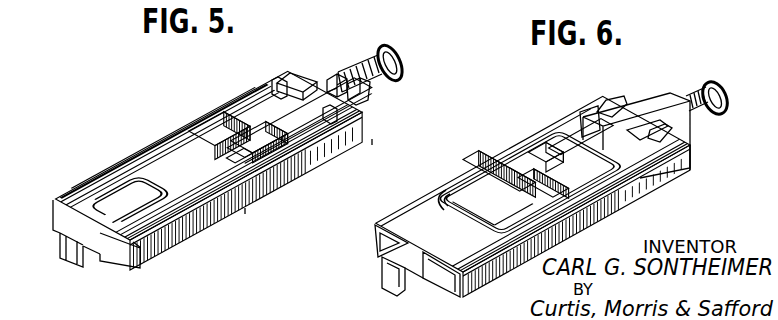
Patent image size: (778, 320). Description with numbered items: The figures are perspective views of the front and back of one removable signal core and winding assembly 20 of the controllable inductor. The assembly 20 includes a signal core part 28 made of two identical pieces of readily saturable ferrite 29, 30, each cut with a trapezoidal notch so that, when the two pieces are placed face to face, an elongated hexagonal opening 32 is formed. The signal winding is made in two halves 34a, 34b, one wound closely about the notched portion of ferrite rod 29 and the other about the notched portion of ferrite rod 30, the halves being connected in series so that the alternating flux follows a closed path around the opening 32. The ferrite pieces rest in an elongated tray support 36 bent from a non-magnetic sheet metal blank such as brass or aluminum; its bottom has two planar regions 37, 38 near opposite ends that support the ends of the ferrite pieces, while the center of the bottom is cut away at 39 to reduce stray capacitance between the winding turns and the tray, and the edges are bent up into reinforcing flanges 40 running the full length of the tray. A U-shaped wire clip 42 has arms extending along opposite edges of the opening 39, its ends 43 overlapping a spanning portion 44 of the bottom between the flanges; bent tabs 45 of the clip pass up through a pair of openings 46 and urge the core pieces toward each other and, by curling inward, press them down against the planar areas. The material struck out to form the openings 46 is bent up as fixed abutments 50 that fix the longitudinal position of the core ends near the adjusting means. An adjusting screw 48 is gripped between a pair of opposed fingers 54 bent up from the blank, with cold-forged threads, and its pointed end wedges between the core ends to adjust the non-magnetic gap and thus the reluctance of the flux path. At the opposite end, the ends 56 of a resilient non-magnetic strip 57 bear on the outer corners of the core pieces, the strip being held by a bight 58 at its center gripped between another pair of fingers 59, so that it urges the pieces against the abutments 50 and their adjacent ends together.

In FIG. 5, the signal core and winding assembly 20 is at (170, 124).
In FIG. 6, the signal core and winding assembly 20 is at (610, 221).
In FIG. 5, the signal core part 28 is at (152, 171).
In FIG. 6, the signal core part 28 is at (497, 186).
In FIG. 5, the ferrite piece 29 is at (298, 78).
In FIG. 5, the ferrite piece 30 is at (317, 143).
In FIG. 6, the ferrite piece 30 is at (553, 152).
In FIG. 5, the hexagonal slot or opening 32 is at (256, 134).
In FIG. 6, the hexagonal slot or opening 32 is at (560, 163).
In FIG. 5, the signal winding half 34a is at (210, 132).
In FIG. 5, the signal winding half 34b is at (263, 172).
In FIG. 5, the tray support 36 is at (170, 258).
In FIG. 6, the tray support 36 is at (375, 242).
In FIG. 6, the planar region 37 is at (467, 193).
In FIG. 6, the planar region 38 is at (583, 133).
In FIG. 6, the cut-away opening 39 is at (612, 198).
In FIG. 5, the reinforcing flange 40 is at (170, 137).
In FIG. 6, the reinforcing flange 40 is at (570, 228).
In FIG. 6, the U-shaped wire clip 42 is at (442, 200).
In FIG. 6, the wire clip end 43 is at (600, 102).
In FIG. 6, the spanning portion 44 is at (627, 105).
In FIG. 5, the bent tab 45 is at (279, 93).
In FIG. 6, the opening 46 is at (688, 157).
In FIG. 5, the adjusting screw 48 is at (405, 70).
In FIG. 6, the adjusting screw 48 is at (723, 79).
In FIG. 5, the fixed abutment 50 is at (332, 80).
In FIG. 5, the opposed finger 54 is at (356, 72).
In FIG. 6, the opposed finger 54 is at (687, 113).
In FIG. 5, the resilient strip end 56 is at (133, 218).
In FIG. 5, the resilient strip 57 is at (97, 184).
In FIG. 5, the bight 58 is at (63, 252).
In FIG. 6, the bight 58 is at (385, 282).
In FIG. 5, the finger 59 is at (95, 256).
In FIG. 6, the finger 59 is at (383, 268).